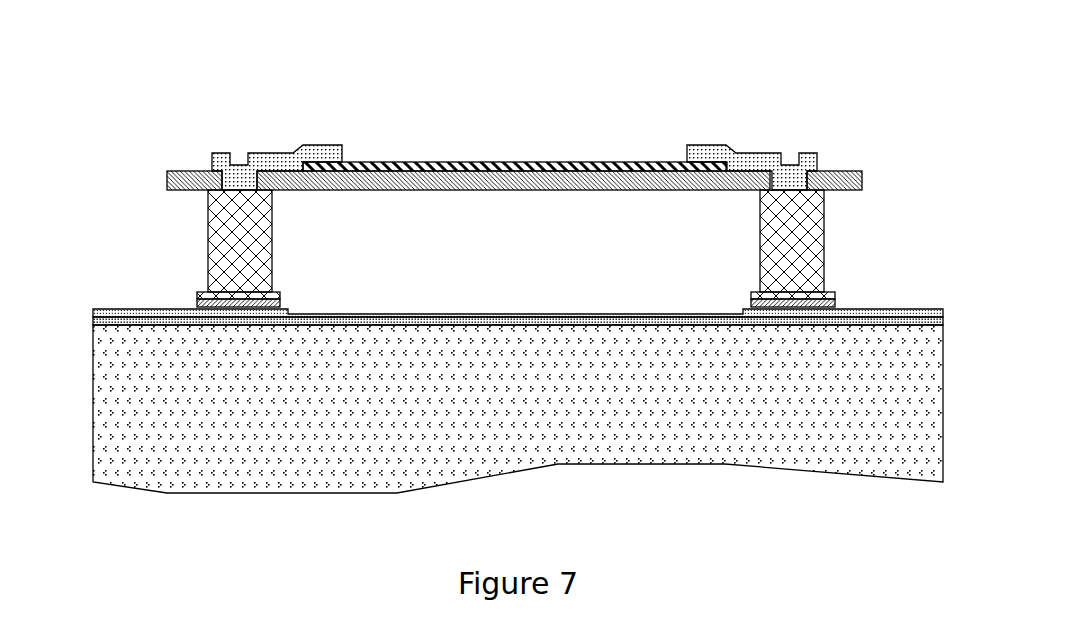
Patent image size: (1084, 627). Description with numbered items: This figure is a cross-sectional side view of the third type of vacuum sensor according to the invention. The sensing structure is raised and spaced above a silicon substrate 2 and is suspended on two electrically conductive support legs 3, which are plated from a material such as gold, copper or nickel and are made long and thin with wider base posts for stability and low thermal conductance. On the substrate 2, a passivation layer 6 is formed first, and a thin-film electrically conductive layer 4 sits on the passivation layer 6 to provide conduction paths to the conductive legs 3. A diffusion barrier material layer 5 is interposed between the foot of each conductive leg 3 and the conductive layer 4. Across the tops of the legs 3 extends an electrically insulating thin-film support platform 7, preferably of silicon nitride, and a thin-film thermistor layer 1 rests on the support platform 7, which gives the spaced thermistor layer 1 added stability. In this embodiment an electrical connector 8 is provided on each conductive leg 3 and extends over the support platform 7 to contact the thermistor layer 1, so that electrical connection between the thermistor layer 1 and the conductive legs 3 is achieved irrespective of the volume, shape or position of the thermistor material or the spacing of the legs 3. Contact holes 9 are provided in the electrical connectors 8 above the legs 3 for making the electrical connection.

The thermistor layer 1 is at (430, 168).
The silicon substrate 2 is at (132, 450).
The conductive legs 3 is at (227, 243).
The conductive layer 4 is at (163, 312).
The diffusion barrier material layer 5 is at (213, 303).
The passivation layer 6 is at (123, 321).
The support platform 7 is at (543, 180).
The electrical connector 8 is at (277, 163).
The contact holes 9 is at (239, 152).